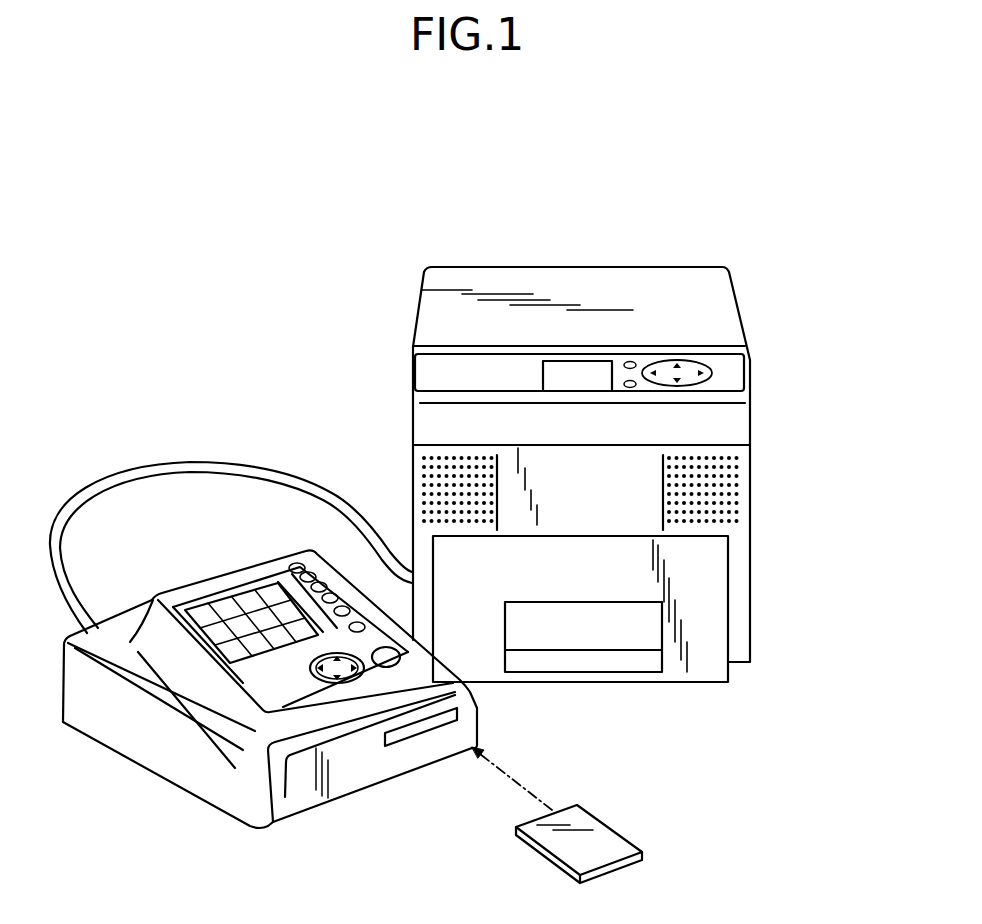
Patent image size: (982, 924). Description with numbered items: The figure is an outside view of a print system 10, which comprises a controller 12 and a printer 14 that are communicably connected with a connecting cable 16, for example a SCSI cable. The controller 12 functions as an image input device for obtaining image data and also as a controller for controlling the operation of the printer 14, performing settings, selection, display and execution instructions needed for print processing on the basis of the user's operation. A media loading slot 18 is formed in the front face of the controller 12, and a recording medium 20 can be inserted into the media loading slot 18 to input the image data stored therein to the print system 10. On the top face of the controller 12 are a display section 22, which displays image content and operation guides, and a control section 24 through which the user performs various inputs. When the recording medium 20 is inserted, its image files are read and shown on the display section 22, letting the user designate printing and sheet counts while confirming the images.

The print system 10 is at (308, 294).
The controller 12 is at (213, 812).
The printer 14 is at (737, 290).
The connecting cable 16 is at (230, 468).
The media loading slot 18 is at (405, 735).
The recording medium 20 is at (602, 840).
The display section 22 is at (212, 610).
The control section 24 is at (291, 573).